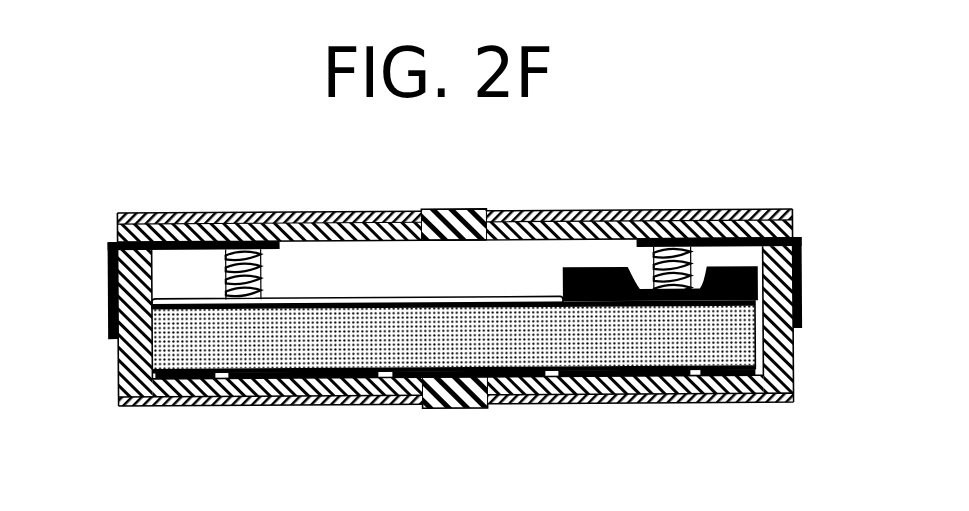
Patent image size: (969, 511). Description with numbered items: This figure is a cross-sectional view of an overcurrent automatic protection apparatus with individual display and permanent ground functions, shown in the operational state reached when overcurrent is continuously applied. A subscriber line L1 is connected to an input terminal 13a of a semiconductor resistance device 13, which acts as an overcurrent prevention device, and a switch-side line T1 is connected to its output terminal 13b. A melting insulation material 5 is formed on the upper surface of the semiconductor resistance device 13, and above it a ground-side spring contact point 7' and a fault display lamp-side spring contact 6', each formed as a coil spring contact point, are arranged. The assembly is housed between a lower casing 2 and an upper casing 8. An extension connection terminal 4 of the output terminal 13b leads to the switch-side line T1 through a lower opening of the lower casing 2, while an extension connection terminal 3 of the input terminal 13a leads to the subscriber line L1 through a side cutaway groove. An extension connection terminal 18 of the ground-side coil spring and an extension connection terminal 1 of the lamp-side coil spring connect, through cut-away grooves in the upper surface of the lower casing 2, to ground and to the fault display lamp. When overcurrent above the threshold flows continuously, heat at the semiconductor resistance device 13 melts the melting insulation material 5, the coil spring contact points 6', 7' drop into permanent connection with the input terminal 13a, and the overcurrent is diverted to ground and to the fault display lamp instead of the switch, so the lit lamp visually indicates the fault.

The extension connection terminal 1 is at (108, 276).
The lower casing 2 is at (793, 364).
The extension connection terminal 3 is at (742, 268).
The extension connection terminal 4 is at (228, 405).
The melting insulation material 5 is at (378, 297).
The fault display lamp-side spring contact 6' is at (243, 236).
The ground-side spring contact point 7' is at (671, 226).
The upper casing 8 is at (452, 209).
The semiconductor resistance device 13 is at (547, 343).
The input terminal 13a is at (685, 300).
The output terminal 13b is at (373, 405).
The extension connection terminal 18 is at (805, 272).
The switch-side line T1 is at (311, 211).
The subscriber line L1 is at (537, 211).